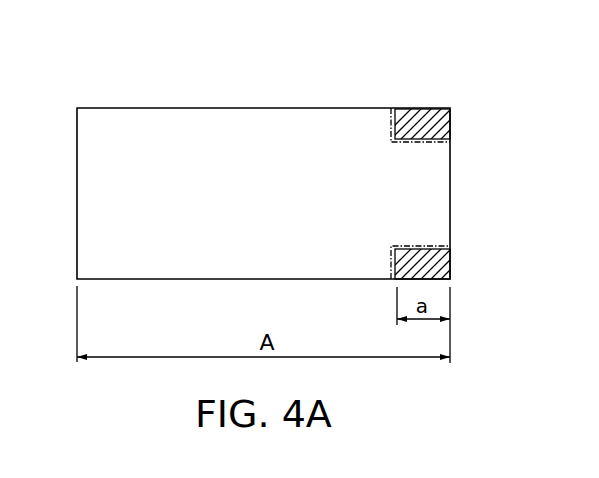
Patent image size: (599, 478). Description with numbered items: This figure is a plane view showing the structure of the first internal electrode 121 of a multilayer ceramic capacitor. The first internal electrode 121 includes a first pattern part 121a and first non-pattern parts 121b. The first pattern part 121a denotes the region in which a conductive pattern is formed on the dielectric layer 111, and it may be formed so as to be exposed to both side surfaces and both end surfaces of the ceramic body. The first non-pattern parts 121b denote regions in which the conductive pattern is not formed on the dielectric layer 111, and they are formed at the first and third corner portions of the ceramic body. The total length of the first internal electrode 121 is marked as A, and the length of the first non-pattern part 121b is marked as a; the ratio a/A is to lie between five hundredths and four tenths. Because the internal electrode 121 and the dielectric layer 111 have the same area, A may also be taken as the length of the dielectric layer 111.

The first internal electrode 121 is at (263, 139).
The first pattern part 121a is at (248, 110).
The first non-pattern part 121b is at (401, 162).
The dielectric layer 111 is at (425, 123).